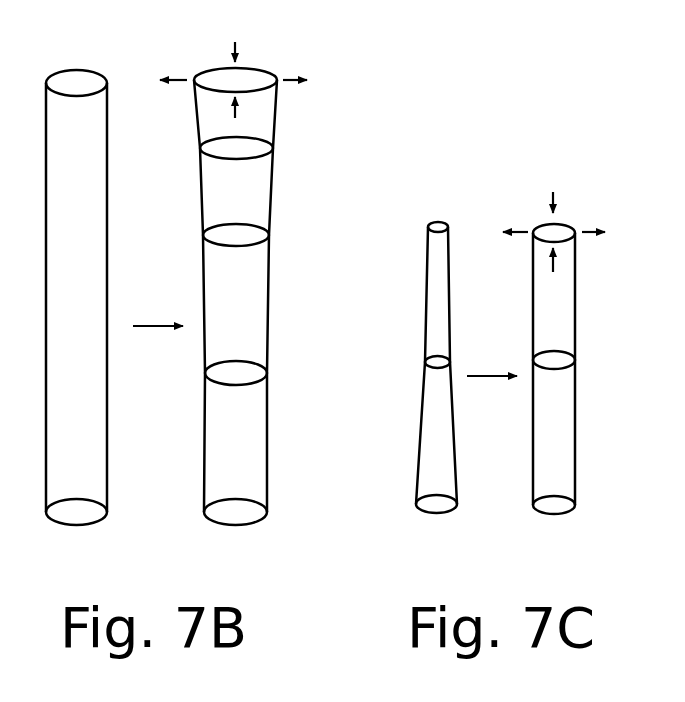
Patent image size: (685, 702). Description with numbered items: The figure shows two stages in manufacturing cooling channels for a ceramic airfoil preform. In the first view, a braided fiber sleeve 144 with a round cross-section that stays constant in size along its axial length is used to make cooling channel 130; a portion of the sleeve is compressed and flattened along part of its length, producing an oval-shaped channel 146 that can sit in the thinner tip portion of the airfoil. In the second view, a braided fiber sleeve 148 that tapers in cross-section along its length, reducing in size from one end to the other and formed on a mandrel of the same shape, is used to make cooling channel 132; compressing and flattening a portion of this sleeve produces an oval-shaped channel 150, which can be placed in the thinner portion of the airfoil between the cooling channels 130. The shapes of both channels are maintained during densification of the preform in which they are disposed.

In FIG. 7B, the braided fiber sleeve 144 is at (107, 245).
In FIG. 7B, the cooling channel 130 is at (277, 122).
In FIG. 7B, the oval-shaped channel 146 is at (255, 77).
In FIG. 7C, the braided fiber sleeve 148 is at (452, 318).
In FIG. 7C, the cooling channel 132 is at (575, 300).
In FIG. 7C, the oval-shaped channel 150 is at (562, 230).